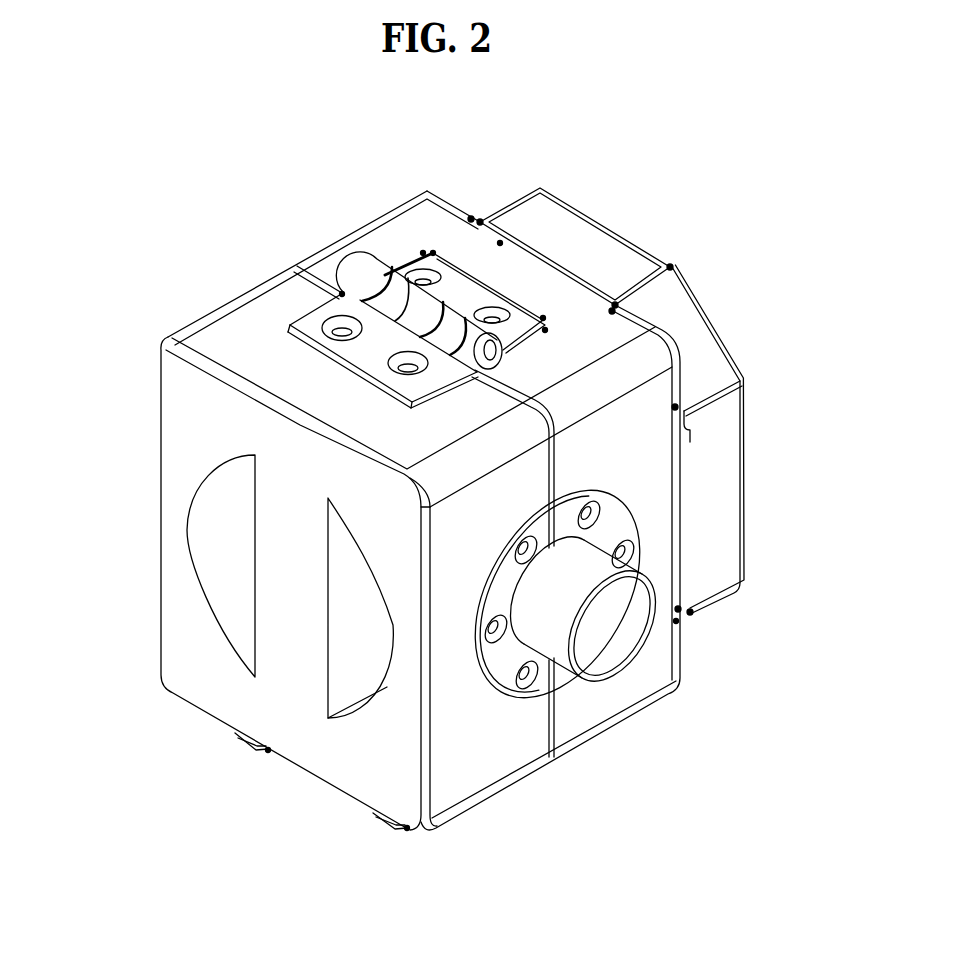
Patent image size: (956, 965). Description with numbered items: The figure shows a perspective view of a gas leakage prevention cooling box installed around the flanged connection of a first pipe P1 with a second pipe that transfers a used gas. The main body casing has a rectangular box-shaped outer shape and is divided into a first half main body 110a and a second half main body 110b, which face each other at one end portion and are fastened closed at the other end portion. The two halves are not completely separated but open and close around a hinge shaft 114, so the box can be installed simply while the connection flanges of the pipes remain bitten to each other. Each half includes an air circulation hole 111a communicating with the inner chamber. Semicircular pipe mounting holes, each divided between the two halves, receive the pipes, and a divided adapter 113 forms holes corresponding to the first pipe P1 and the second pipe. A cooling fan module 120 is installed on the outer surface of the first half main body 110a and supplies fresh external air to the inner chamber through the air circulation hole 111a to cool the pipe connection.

The first half main body 110a is at (447, 222).
The second half main body 110b is at (212, 333).
The air circulation hole 111a is at (218, 552).
The divided adapter 113 is at (501, 682).
The hinge shaft 114 is at (385, 285).
The cooling fan module 120 is at (707, 312).
The first pipe P1 is at (562, 655).